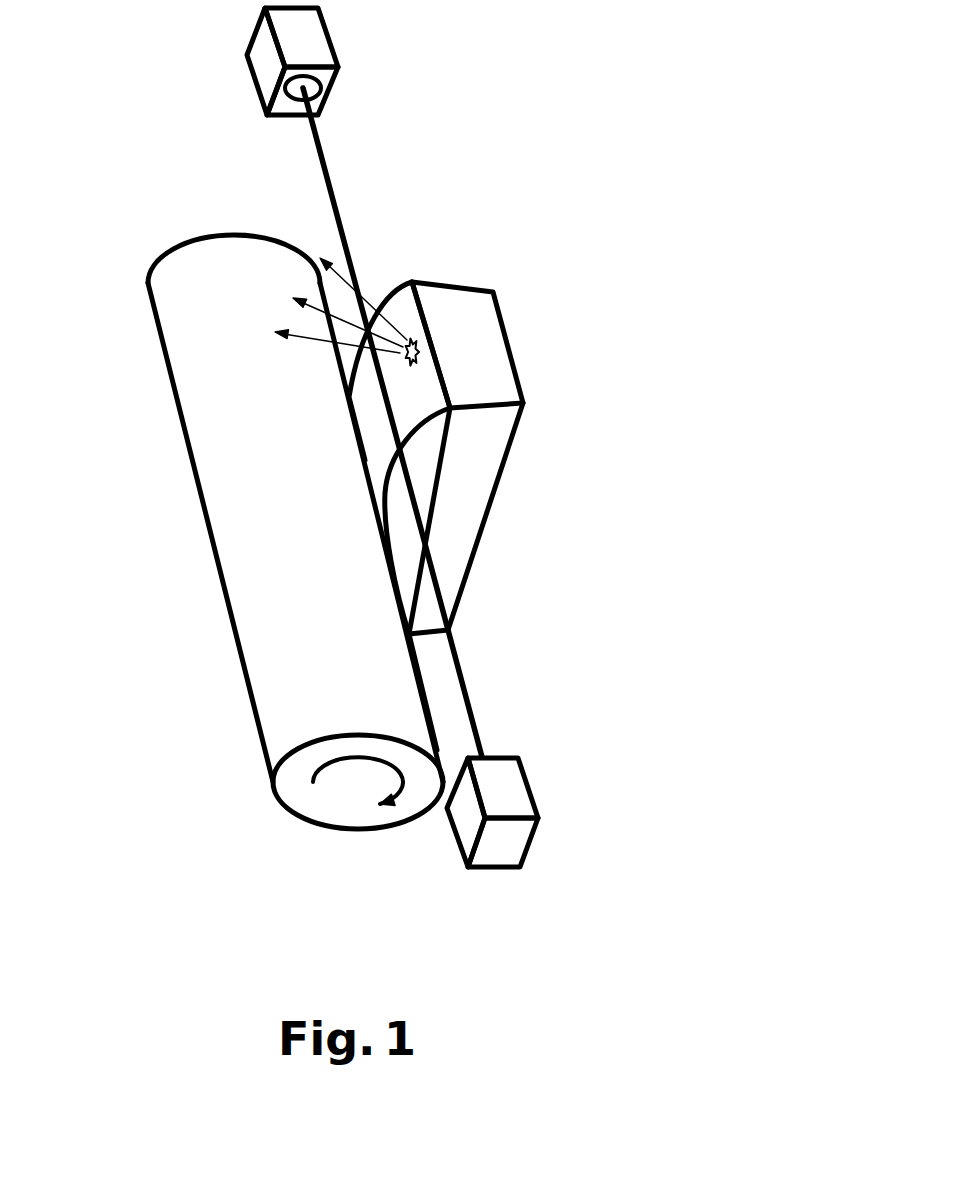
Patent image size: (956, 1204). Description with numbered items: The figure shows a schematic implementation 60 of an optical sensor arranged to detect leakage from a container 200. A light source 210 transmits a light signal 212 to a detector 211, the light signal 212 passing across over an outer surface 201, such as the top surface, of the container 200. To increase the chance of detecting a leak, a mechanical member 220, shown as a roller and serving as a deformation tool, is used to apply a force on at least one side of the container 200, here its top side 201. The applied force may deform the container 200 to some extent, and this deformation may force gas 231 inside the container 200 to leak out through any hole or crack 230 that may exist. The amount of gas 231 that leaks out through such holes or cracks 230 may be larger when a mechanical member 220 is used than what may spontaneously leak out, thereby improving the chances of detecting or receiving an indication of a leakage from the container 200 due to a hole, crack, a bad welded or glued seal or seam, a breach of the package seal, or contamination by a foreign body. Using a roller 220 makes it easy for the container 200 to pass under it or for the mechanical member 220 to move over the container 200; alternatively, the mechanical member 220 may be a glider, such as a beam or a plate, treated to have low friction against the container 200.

The implementation of an optical sensor 60 is at (169, 798).
The container 200 is at (531, 501).
The outer surface 201 is at (417, 416).
The light source 210 is at (453, 885).
The detector 211 is at (240, 92).
The light signal 212 is at (338, 158).
The mechanical member 220 is at (193, 568).
The hole or crack 230 is at (422, 333).
The gas 231 is at (375, 282).